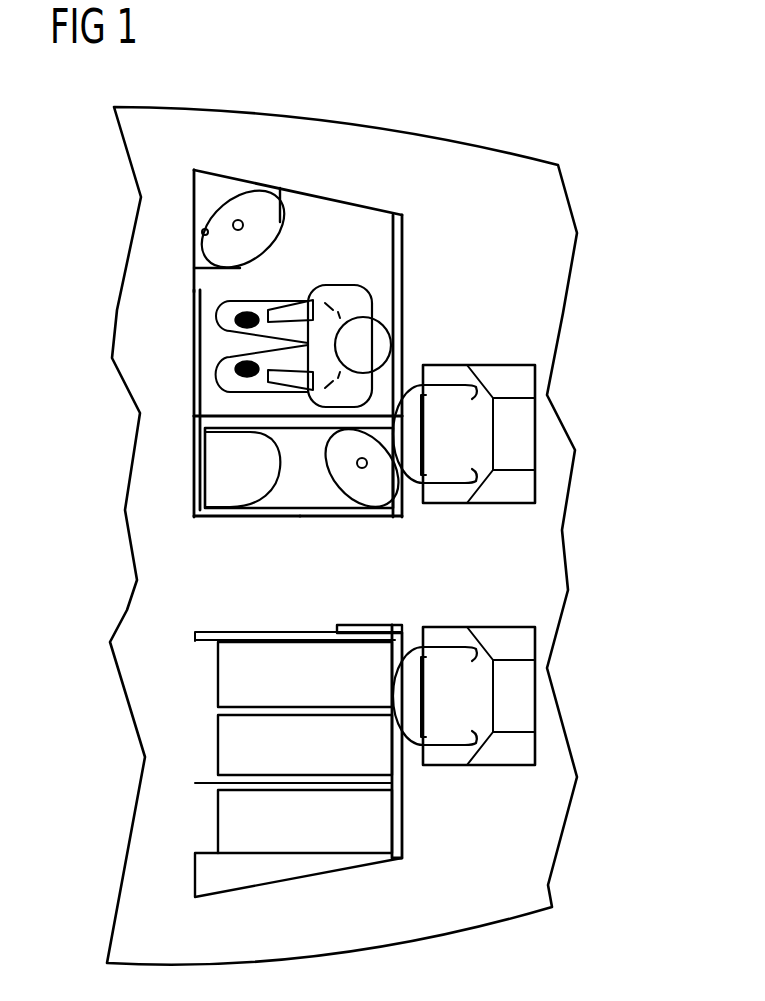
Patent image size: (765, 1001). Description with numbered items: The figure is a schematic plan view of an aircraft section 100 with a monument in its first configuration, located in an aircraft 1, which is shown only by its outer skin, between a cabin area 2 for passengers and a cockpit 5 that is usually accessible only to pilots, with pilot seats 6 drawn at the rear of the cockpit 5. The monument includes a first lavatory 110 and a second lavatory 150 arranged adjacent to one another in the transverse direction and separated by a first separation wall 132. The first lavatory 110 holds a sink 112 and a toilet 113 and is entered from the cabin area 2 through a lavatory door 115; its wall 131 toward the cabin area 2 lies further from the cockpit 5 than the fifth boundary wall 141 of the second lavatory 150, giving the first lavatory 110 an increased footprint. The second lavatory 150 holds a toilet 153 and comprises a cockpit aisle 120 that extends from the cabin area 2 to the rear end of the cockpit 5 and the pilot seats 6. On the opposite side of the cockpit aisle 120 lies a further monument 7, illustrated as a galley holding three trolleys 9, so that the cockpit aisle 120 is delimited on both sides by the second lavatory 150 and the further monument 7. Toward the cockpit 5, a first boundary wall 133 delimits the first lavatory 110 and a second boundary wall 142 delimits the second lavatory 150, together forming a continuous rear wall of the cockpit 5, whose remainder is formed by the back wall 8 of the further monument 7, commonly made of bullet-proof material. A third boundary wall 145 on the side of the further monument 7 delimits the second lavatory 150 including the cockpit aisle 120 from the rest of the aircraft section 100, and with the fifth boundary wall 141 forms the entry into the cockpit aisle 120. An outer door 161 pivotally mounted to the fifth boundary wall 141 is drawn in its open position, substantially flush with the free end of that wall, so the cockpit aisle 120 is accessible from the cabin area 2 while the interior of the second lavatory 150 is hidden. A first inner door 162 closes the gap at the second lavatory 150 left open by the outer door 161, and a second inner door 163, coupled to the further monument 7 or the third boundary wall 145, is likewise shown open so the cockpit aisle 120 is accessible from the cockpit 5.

The aircraft 1 is at (520, 163).
The cabin area 2 is at (157, 131).
The cockpit 5 is at (551, 192).
The pilot seats 6 is at (522, 378).
The further monument 7 is at (162, 760).
The back wall 8 is at (403, 778).
The trolleys 9 is at (235, 683).
The aircraft section 100 is at (142, 241).
The first lavatory 110 is at (136, 323).
The sink 112 is at (225, 220).
The toilet 113 is at (382, 310).
The lavatory door 115 is at (195, 362).
The cockpit aisle 120 is at (160, 580).
The wall 131 is at (193, 259).
The first separation wall 132 is at (197, 410).
The first boundary wall 133 is at (397, 247).
The fifth boundary wall 141 is at (196, 501).
The second boundary wall 142 is at (403, 493).
The third boundary wall 145 is at (196, 637).
The second lavatory 150 is at (141, 480).
The toilet 153 is at (218, 442).
The outer door 161 is at (252, 517).
The first inner door 162 is at (360, 517).
The second inner door 163 is at (372, 624).